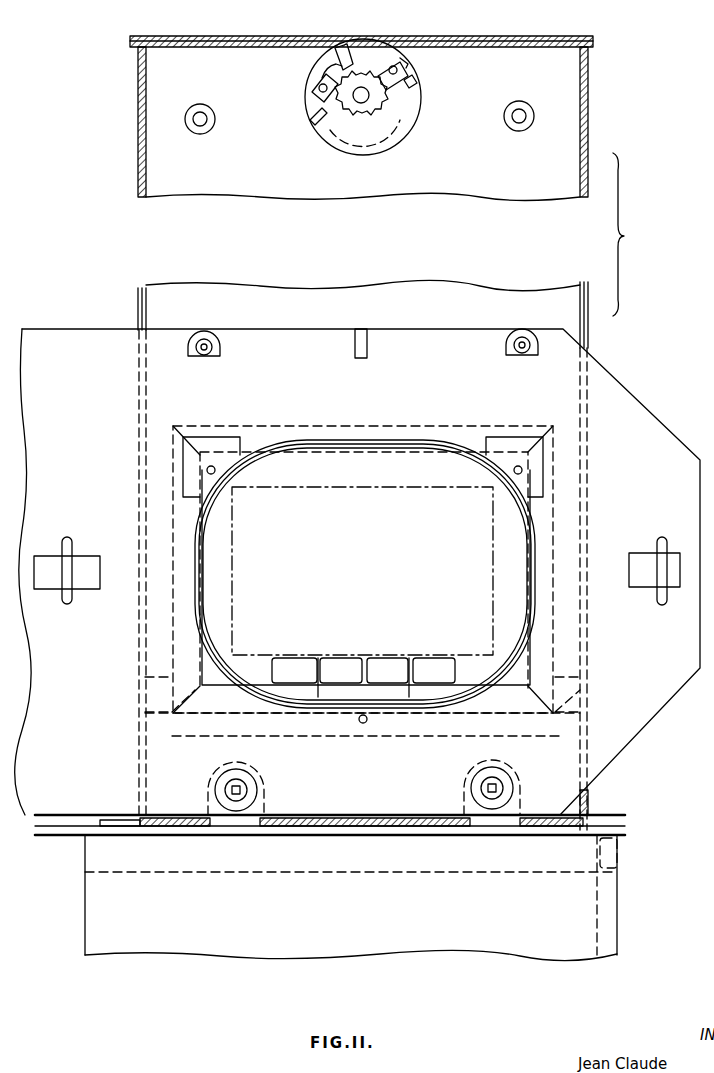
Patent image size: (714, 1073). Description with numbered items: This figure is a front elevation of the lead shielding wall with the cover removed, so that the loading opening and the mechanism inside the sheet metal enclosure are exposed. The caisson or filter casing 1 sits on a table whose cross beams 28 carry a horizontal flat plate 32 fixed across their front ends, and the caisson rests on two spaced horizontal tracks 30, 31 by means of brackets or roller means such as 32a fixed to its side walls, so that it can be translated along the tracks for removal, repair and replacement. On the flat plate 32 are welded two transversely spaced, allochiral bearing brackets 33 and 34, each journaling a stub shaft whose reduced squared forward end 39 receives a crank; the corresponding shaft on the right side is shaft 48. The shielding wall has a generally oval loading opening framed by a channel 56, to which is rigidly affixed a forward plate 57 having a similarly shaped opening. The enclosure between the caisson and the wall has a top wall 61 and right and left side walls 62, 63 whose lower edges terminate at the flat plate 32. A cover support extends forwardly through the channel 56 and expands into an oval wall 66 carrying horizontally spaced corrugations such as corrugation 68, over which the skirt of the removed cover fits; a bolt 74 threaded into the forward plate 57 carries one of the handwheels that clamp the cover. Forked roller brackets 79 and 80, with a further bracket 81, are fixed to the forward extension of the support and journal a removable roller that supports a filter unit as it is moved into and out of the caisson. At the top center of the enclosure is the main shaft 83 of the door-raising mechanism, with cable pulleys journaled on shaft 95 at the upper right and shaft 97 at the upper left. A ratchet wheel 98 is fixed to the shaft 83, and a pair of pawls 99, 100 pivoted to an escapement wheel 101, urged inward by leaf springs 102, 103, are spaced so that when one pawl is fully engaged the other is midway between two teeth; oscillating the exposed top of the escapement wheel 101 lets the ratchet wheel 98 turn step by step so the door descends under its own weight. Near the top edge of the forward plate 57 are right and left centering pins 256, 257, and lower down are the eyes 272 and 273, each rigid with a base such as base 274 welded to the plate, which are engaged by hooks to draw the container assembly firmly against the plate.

The caisson or filter casing 1 is at (246, 642).
The cross beams 28 is at (613, 853).
The horizontal track 30 is at (140, 718).
The horizontal track 31 is at (585, 720).
The horizontal flat plate 32 is at (157, 690).
The bracket or roller means 32a is at (572, 698).
The bearing bracket 33 is at (258, 805).
The bearing bracket 34 is at (466, 803).
The reduced squared forward end 39 is at (242, 790).
The shaft 48 is at (497, 786).
The channel 56 is at (222, 540).
The forward plate 57 is at (655, 704).
The top wall 61 is at (234, 47).
The right side wall 62 is at (589, 110).
The left side wall 63 is at (147, 166).
The oval wall 66 is at (478, 668).
The corrugation 68 is at (293, 441).
The bolt 74 is at (366, 725).
The forked roller bracket 79 is at (319, 660).
The forked roller bracket 80 is at (411, 660).
The tab 81 is at (343, 662).
The main shaft 83 is at (344, 124).
The shaft 95 is at (527, 109).
The shaft 97 is at (210, 128).
The ratchet wheel 98 is at (330, 120).
The pawl 99 is at (311, 98).
The pawl 100 is at (412, 72).
The escapement wheel 101 is at (400, 125).
The leaf spring 102 is at (323, 52).
The leaf spring 103 is at (402, 88).
The right centering pin 256 is at (521, 353).
The left centering pin 257 is at (206, 354).
The eye 272 is at (70, 560).
The eye 273 is at (660, 590).
The base 274 is at (88, 590).